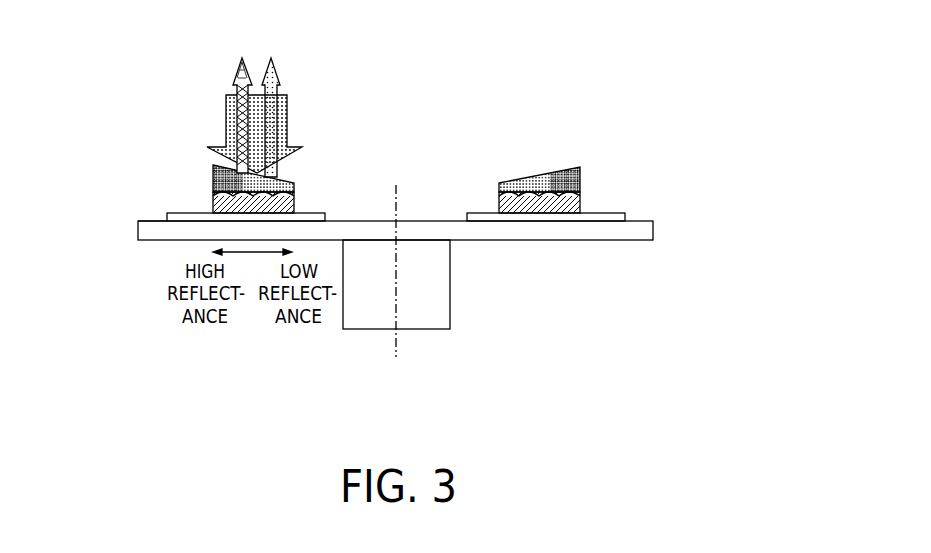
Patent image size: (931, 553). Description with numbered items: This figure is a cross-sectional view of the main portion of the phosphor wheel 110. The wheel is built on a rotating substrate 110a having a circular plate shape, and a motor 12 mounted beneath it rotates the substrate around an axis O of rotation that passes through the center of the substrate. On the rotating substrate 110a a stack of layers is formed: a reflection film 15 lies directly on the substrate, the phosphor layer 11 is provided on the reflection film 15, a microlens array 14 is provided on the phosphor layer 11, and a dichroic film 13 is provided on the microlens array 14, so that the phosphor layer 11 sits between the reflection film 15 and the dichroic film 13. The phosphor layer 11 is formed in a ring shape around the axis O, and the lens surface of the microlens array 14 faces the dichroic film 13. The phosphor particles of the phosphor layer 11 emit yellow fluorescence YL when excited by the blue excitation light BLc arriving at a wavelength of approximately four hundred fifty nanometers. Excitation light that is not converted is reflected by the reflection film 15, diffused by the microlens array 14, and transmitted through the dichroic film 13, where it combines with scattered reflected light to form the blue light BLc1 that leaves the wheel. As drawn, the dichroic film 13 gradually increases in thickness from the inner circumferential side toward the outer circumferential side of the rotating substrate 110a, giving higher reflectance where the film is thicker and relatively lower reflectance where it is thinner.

The phosphor wheel 110 is at (686, 120).
The rotating substrate 110a is at (138, 232).
The phosphor layer 11 is at (583, 207).
The motor 12 is at (437, 271).
The dichroic film 13 is at (568, 167).
The microlens array 14 is at (582, 196).
The reflection film 15 is at (607, 212).
The axis of rotation O is at (396, 345).
The fluorescence YL is at (236, 92).
The excitation light BLc is at (288, 135).
The blue light BLc1 is at (281, 92).